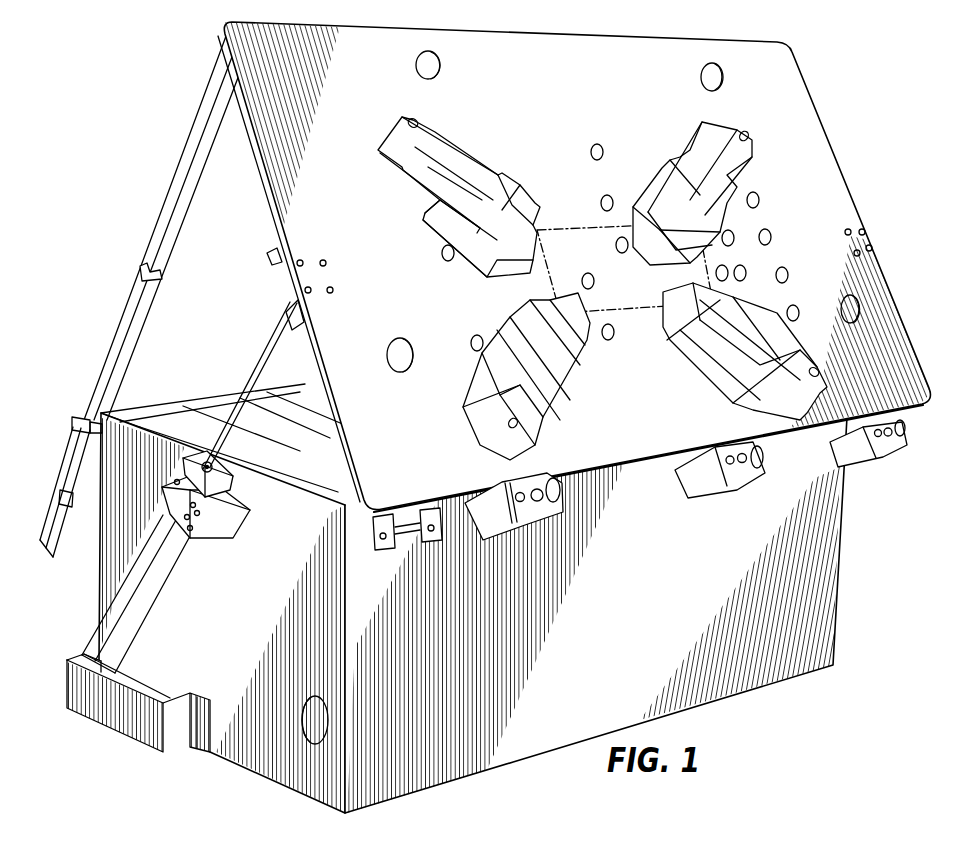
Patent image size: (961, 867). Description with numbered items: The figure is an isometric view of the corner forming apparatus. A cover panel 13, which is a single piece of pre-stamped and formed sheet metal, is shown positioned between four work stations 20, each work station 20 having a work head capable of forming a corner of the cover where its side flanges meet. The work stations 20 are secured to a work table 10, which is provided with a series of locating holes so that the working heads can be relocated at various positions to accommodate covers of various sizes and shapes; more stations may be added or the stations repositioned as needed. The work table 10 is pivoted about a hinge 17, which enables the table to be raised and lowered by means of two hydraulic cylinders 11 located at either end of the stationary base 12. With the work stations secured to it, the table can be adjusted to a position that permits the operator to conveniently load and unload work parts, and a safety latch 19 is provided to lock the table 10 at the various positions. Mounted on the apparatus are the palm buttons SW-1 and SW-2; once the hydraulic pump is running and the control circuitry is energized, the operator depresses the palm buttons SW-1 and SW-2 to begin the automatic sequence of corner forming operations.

The work table 10 is at (896, 345).
The hydraulic cylinder 11 is at (152, 597).
The stationary base 12 is at (830, 564).
The cover panel 13 is at (586, 236).
The hinge 17 is at (415, 522).
The safety latch 19 is at (132, 335).
The work station 20 is at (407, 203).
The palm button SW-1 is at (737, 478).
The palm button SW-2 is at (530, 528).